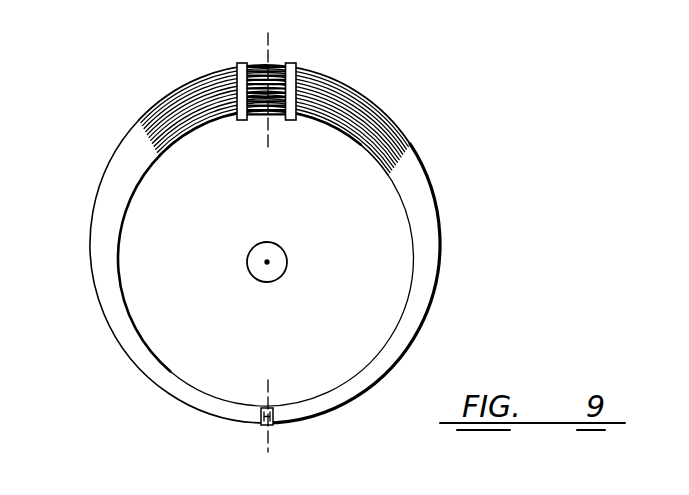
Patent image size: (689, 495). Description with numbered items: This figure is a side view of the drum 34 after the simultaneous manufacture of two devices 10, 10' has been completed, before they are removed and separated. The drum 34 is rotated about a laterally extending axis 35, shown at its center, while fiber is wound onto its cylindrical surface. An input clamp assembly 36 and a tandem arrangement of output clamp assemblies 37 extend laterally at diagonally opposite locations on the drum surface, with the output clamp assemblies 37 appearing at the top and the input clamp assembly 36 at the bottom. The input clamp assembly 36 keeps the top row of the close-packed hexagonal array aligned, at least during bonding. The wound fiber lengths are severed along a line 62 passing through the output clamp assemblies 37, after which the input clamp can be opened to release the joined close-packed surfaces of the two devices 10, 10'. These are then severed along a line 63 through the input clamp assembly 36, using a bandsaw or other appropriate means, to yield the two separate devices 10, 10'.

The device 10 is at (298, 271).
The device 10' is at (224, 258).
The drum 34 is at (354, 218).
The axis 35 is at (267, 262).
The input clamp assembly 36 is at (273, 425).
The output clamp assemblies 37 is at (301, 63).
The line 62 is at (271, 45).
The line 63 is at (265, 440).